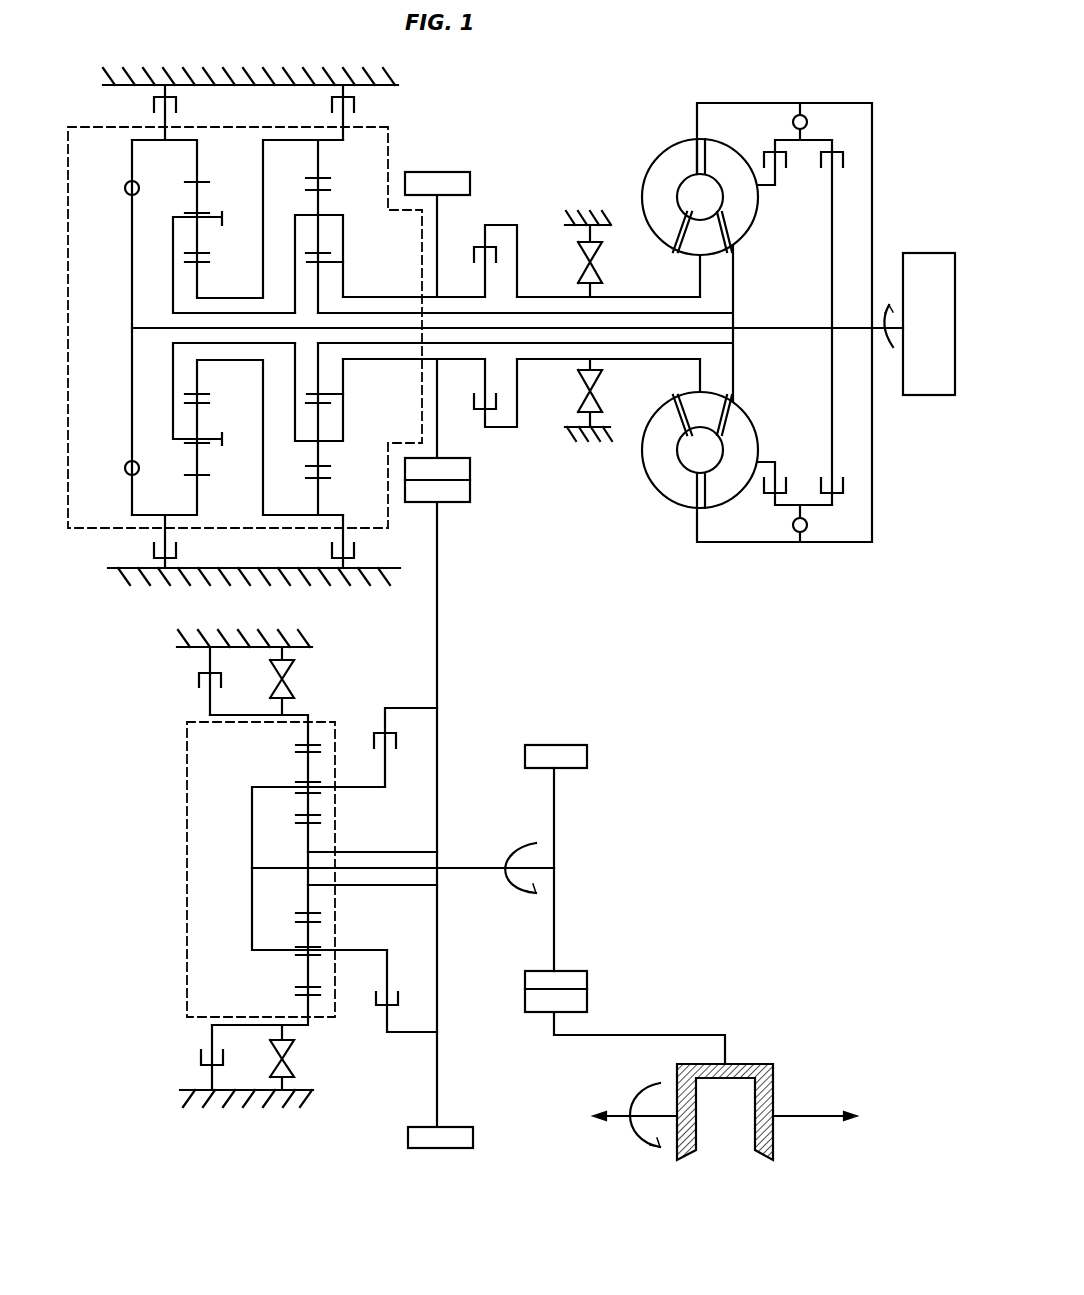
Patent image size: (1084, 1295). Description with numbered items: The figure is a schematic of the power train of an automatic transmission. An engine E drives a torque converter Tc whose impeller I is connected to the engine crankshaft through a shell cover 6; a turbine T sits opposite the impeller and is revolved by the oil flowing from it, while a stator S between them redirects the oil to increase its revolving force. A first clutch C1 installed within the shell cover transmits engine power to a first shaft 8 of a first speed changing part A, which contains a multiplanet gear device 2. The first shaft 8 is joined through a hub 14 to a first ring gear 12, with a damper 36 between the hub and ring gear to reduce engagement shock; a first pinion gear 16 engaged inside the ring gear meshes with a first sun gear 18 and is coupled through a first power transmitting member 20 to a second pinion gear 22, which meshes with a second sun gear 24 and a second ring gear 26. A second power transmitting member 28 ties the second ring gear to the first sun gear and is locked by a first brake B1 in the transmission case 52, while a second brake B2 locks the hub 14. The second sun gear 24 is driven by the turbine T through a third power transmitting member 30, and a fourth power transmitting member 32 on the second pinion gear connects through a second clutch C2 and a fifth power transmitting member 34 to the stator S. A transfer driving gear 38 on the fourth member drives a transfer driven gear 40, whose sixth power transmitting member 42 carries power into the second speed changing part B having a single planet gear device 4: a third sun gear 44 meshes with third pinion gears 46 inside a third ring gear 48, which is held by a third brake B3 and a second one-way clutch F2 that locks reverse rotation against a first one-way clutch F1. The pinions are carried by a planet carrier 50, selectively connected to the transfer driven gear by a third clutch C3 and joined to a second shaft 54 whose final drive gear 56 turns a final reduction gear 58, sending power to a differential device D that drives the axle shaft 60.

The multiplanet gear device 2 is at (68, 126).
The single planet gear device 4 is at (187, 858).
The shell cover 6 is at (783, 103).
The first shaft 8 is at (785, 325).
The first ring gear 12 is at (190, 182).
The hub 14 is at (130, 263).
The first pinion gear 16 is at (208, 256).
The first sun gear 18 is at (212, 264).
The first power transmitting member 20 is at (183, 315).
The second pinion gear 22 is at (332, 191).
The second sun gear 24 is at (345, 268).
The second ring gear 26 is at (311, 178).
The second power transmitting member 28 is at (263, 171).
The third power transmitting member 30 is at (735, 345).
The fourth power transmitting member 32 is at (345, 240).
The fifth power transmitting member 34 is at (540, 297).
The damper 36 is at (125, 189).
The transfer driving gear 38 is at (462, 184).
The transfer driven gear 40 is at (462, 492).
The sixth power transmitting member 42 is at (405, 850).
The third sun gear 44 is at (300, 826).
The third pinion gear 46 is at (300, 760).
The third ring gear 48 is at (296, 748).
The planet carrier 50 is at (252, 912).
The transmission case 52 is at (262, 72).
The second shaft 54 is at (477, 866).
The final drive gear 56 is at (586, 758).
The final reduction gear 58 is at (586, 1001).
The axle shaft 60 is at (820, 1112).
The first speed changing part A is at (400, 157).
The second speed changing part B is at (187, 1002).
The first brake B1 is at (360, 326).
The second brake B2 is at (181, 326).
The third brake B3 is at (190, 868).
The first clutch C1 is at (816, 322).
The second clutch C2 is at (483, 324).
The third clutch C3 is at (405, 870).
The first one-way clutch F1 is at (598, 326).
The second one-way clutch F2 is at (297, 868).
The torque converter Tc is at (712, 97).
The impeller I is at (660, 175).
The turbine T is at (755, 208).
The stator S is at (692, 250).
The engine E is at (929, 324).
The differential device D is at (668, 1082).